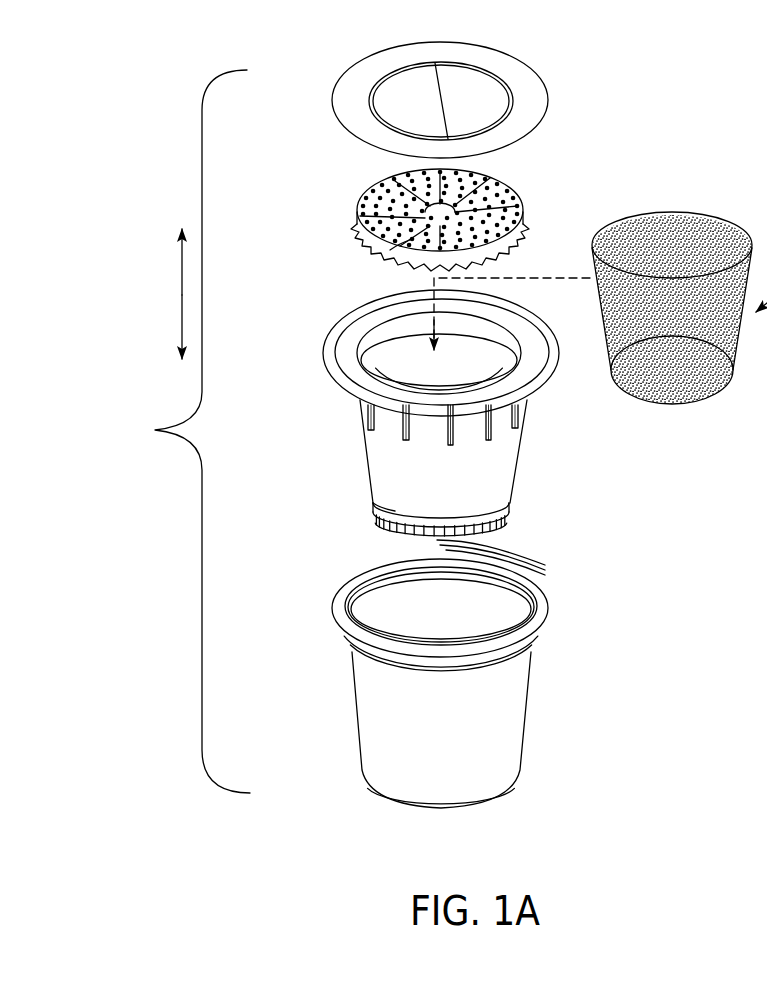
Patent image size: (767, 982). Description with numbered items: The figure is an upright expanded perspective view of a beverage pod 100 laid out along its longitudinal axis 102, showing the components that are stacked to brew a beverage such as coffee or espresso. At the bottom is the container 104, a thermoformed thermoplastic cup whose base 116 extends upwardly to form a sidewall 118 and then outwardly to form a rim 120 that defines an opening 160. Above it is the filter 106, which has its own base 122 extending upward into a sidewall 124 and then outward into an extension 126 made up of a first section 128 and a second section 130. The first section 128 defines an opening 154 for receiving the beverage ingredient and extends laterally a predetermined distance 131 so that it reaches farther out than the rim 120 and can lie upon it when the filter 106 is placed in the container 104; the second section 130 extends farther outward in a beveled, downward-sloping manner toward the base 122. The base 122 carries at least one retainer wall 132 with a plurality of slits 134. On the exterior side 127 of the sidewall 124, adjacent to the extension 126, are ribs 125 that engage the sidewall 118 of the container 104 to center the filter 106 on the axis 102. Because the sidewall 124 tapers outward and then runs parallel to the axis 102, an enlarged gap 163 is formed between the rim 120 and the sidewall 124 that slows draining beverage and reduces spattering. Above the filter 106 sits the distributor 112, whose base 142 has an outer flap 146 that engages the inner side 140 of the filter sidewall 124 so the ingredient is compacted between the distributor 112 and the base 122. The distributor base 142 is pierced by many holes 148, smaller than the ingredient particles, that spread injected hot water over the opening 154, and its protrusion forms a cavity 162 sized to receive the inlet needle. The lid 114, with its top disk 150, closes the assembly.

The pod 100 is at (155, 430).
The longitudinal axis 102 is at (180, 292).
The container 104 is at (478, 721).
The filter 106 is at (645, 444).
The distributor 112 is at (456, 189).
The lid 114 is at (506, 84).
The base 116 is at (430, 817).
The sidewall 118 is at (505, 740).
The rim 120 is at (547, 612).
The base 122 is at (487, 518).
The sidewall 124 is at (419, 490).
The ribs 125 is at (395, 438).
The extension 126 is at (474, 416).
The exterior side 127 is at (385, 500).
The first section 128 is at (533, 342).
The second section 130 is at (530, 387).
The predetermined distance 131 is at (332, 368).
The retainer wall 132 is at (395, 535).
The slits 134 is at (513, 560).
The inner side 140 is at (377, 343).
The base 142 is at (443, 189).
The outer flap 146 is at (513, 237).
The holes 148 is at (365, 195).
The lid disk 150 is at (511, 72).
The opening 154 is at (480, 358).
The opening 160 is at (375, 636).
The cavity 162 is at (500, 175).
The gap 163 is at (370, 250).